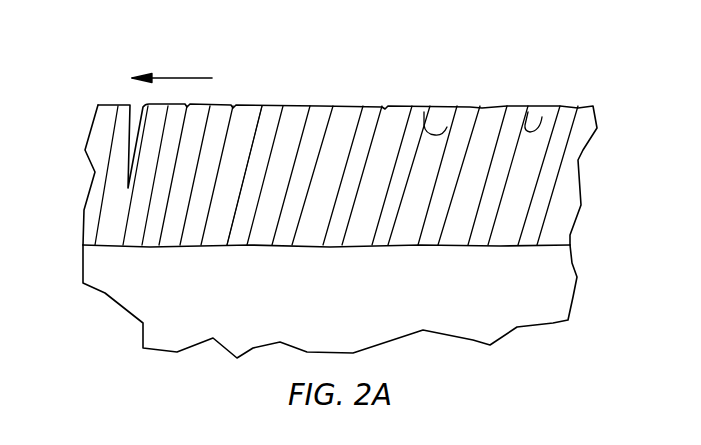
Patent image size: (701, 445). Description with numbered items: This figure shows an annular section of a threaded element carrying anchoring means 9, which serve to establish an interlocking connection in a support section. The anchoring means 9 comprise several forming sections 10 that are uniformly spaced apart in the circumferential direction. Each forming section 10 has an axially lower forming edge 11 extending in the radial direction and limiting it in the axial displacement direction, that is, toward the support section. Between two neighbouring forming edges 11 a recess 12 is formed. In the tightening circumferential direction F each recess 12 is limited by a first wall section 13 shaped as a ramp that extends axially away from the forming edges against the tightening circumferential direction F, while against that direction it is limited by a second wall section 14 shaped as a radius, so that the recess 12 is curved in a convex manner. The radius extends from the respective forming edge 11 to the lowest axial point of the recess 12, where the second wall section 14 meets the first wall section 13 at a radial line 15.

The anchoring means 9 is at (397, 117).
The forming section 10 is at (286, 232).
The forming edge 11 is at (333, 132).
The recess 12 is at (266, 232).
The first wall section 13 is at (278, 173).
The second wall section 14 is at (310, 146).
The radial line 15 is at (285, 195).
The tightening circumferential direction F is at (187, 78).